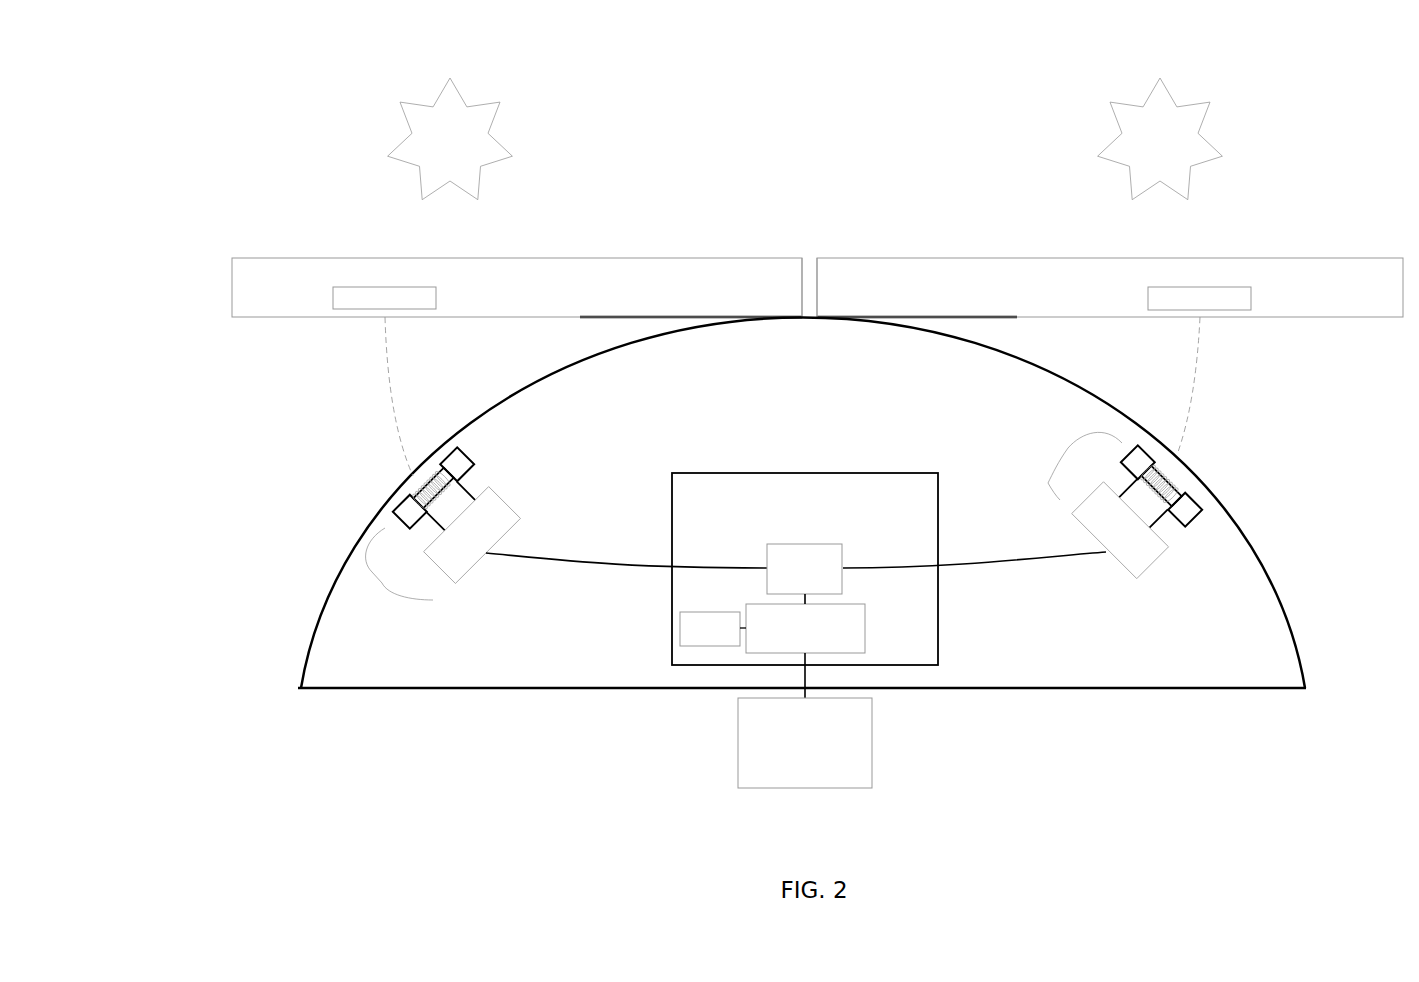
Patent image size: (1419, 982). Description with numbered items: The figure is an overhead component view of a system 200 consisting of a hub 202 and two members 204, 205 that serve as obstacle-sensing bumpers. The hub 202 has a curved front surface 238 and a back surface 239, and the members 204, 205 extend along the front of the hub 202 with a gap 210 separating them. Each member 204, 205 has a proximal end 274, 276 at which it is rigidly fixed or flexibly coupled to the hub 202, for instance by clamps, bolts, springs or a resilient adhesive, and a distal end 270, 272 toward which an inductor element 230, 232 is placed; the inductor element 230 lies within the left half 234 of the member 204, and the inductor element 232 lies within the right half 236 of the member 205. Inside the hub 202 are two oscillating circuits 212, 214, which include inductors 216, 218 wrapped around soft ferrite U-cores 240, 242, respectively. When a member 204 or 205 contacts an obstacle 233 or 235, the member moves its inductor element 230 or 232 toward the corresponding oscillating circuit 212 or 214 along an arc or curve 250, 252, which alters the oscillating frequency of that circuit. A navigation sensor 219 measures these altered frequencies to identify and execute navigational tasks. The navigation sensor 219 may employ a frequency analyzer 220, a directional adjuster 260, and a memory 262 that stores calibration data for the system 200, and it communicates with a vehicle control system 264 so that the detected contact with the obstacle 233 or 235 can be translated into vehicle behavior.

The system 200 is at (770, 72).
The hub 202 is at (797, 382).
The member 204 is at (517, 287).
The member 205 is at (1110, 287).
The gap 210 is at (833, 240).
The oscillating circuit 212 is at (430, 551).
The oscillating circuit 214 is at (1096, 497).
The inductor 216 is at (411, 526).
The inductor 218 is at (1145, 497).
The navigation sensor 219 is at (855, 473).
The frequency analyzer 220 is at (796, 569).
The inductor element 230 is at (436, 291).
The inductor element 232 is at (1251, 298).
The obstacle 233 is at (450, 139).
The left half 234 is at (316, 240).
The obstacle 235 is at (1160, 139).
The right half 236 is at (1264, 240).
The curved front surface 238 is at (1282, 582).
The back surface 239 is at (1086, 688).
The soft ferrite U-core 240 is at (457, 464).
The soft ferrite U-core 242 is at (1185, 510).
The arc 250 is at (392, 408).
The arc 252 is at (1198, 412).
The directional adjuster 260 is at (805, 646).
The memory 262 is at (713, 629).
The vehicle control system 264 is at (805, 743).
The distal end 270 is at (783, 297).
The distal end 272 is at (1403, 262).
The proximal end 274 is at (801, 264).
The proximal end 276 is at (818, 270).